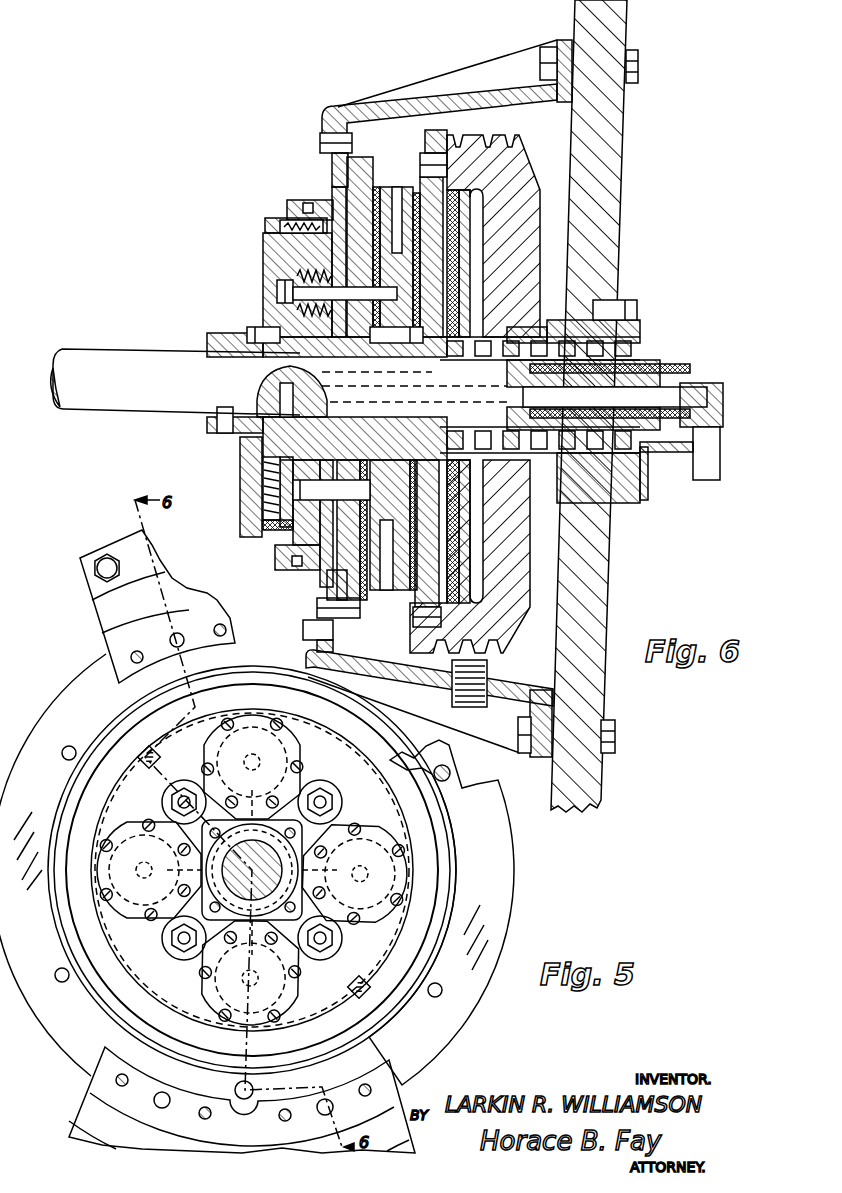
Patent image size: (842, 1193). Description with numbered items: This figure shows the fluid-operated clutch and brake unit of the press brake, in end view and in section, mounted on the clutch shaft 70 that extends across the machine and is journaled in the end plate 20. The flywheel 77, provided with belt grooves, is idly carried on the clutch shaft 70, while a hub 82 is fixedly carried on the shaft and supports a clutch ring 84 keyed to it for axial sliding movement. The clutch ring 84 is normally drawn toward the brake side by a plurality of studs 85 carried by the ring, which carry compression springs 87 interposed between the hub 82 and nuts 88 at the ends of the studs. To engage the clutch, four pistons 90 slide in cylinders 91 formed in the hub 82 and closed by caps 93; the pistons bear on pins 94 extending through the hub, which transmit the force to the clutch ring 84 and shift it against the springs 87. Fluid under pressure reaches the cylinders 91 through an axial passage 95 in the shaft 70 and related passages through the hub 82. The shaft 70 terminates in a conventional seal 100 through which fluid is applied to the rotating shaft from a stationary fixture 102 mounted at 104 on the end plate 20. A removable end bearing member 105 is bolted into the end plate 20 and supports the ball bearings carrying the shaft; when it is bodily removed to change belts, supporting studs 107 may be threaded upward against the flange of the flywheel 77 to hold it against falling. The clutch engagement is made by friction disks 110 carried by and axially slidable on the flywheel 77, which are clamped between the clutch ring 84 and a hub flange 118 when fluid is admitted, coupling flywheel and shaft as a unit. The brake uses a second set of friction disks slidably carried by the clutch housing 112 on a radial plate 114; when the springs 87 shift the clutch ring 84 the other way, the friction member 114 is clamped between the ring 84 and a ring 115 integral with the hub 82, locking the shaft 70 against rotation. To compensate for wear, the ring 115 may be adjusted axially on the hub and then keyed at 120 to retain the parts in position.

In FIG. 6, the end plate 20 is at (622, 30).
In FIG. 6, the clutch shaft 70 is at (82, 357).
In FIG. 5, the clutch shaft 70 is at (218, 922).
In FIG. 6, the flywheel 77 is at (527, 203).
In FIG. 6, the hub 82 is at (273, 257).
In FIG. 6, the clutch ring 84 is at (398, 187).
In FIG. 6, the studs 85 is at (277, 292).
In FIG. 5, the studs 85 is at (328, 810).
In FIG. 6, the compression springs 87 is at (292, 313).
In FIG. 6, the nuts 88 is at (292, 280).
In FIG. 5, the nuts 88 is at (325, 800).
In FIG. 6, the pistons 90 is at (268, 512).
In FIG. 6, the cylinders 91 is at (273, 523).
In FIG. 5, the cylinders 91 is at (290, 755).
In FIG. 6, the caps 93 is at (240, 467).
In FIG. 5, the caps 93 is at (213, 750).
In FIG. 6, the pins 94 is at (370, 490).
In FIG. 6, the axial passage 95 is at (267, 378).
In FIG. 6, the seal 100 is at (662, 367).
In FIG. 6, the stationary fixture 102 is at (712, 462).
In FIG. 6, the mounting of the stationary fixture 104 is at (647, 490).
In FIG. 6, the end bearing member 105 is at (637, 322).
In FIG. 6, the supporting studs 107 is at (460, 705).
In FIG. 6, the friction disks 110 is at (430, 213).
In FIG. 6, the clutch housing 112 is at (372, 107).
In FIG. 5, the clutch housing 112 is at (100, 622).
In FIG. 6, the radial plate 114 is at (335, 200).
In FIG. 5, the radial plate 114 is at (410, 750).
In FIG. 6, the ring 115 is at (327, 200).
In FIG. 5, the ring 115 is at (117, 757).
In FIG. 6, the hub flange 118 is at (463, 230).
In FIG. 6, the key 120 is at (263, 225).
In FIG. 5, the key 120 is at (352, 985).